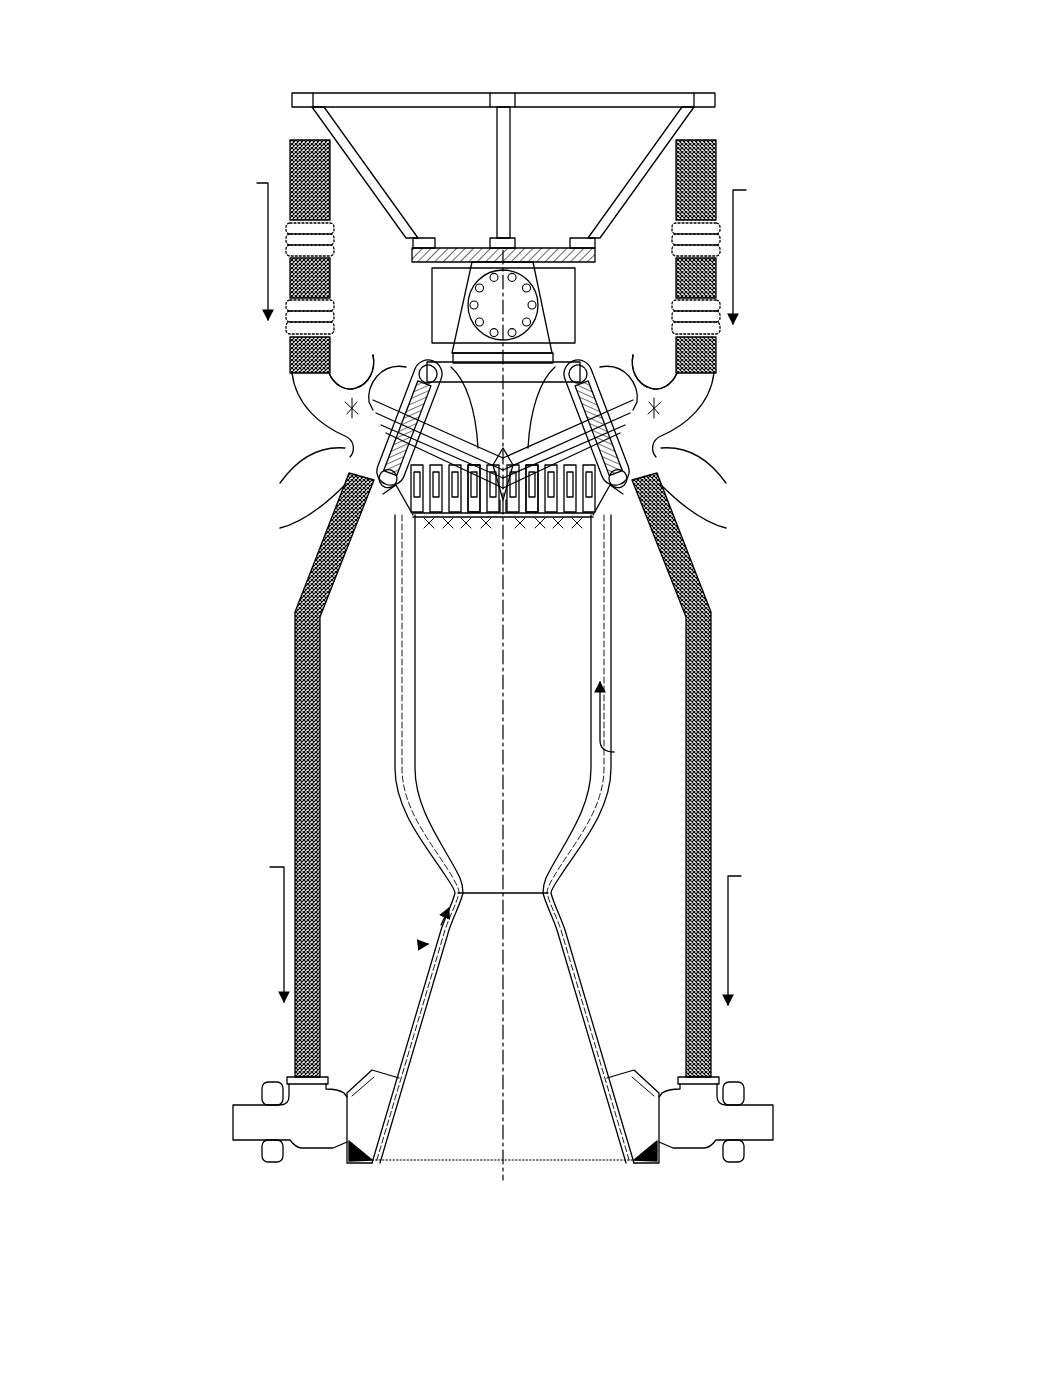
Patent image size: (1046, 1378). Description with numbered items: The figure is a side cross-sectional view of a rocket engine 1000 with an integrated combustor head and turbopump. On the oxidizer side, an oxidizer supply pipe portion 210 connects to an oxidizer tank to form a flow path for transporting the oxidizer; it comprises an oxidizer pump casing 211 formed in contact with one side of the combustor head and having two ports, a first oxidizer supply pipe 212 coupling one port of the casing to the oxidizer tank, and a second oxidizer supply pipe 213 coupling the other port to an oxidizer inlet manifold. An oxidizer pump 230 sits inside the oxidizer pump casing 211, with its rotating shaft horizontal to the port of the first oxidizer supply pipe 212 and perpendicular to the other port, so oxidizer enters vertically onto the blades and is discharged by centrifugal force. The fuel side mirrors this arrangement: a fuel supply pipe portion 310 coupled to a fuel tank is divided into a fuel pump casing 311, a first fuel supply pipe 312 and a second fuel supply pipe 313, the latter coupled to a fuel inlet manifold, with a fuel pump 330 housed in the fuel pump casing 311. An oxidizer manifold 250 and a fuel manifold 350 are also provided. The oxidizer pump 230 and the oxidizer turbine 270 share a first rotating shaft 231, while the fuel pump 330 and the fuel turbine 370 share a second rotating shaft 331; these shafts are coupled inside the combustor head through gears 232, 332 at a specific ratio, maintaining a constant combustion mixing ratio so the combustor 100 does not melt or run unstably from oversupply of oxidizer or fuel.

The rocket engine 1000 is at (455, 42).
The combustor 100 is at (573, 1137).
The oxidizer supply pipe portion 210 is at (155, 355).
The oxidizer pump casing 211 is at (340, 448).
The first oxidizer supply pipe 212 is at (293, 351).
The second oxidizer supply pipe 213 is at (297, 780).
The oxidizer pump 230 is at (372, 372).
The first rotating shaft 231 is at (438, 520).
The gear 232 is at (483, 522).
The oxidizer manifold 250 is at (370, 352).
The oxidizer turbine 270 is at (341, 497).
The fuel supply pipe portion 310 is at (853, 355).
The fuel pump casing 311 is at (666, 448).
The first fuel supply pipe 312 is at (713, 351).
The second fuel supply pipe 313 is at (709, 780).
The fuel pump 330 is at (634, 372).
The second rotating shaft 331 is at (590, 522).
The gear 332 is at (560, 520).
The fuel manifold 350 is at (636, 352).
The fuel turbine 370 is at (665, 497).